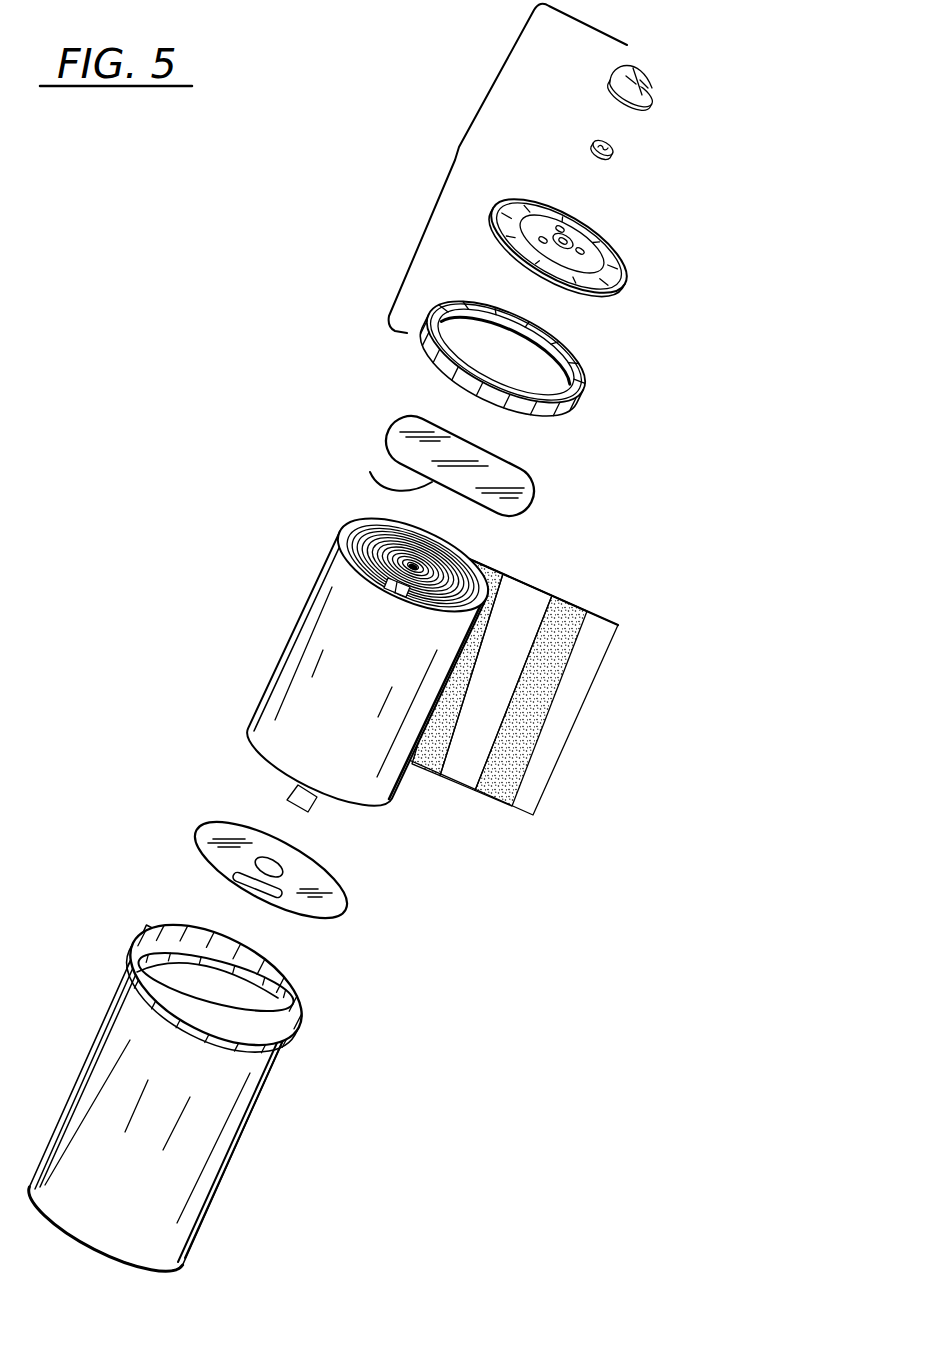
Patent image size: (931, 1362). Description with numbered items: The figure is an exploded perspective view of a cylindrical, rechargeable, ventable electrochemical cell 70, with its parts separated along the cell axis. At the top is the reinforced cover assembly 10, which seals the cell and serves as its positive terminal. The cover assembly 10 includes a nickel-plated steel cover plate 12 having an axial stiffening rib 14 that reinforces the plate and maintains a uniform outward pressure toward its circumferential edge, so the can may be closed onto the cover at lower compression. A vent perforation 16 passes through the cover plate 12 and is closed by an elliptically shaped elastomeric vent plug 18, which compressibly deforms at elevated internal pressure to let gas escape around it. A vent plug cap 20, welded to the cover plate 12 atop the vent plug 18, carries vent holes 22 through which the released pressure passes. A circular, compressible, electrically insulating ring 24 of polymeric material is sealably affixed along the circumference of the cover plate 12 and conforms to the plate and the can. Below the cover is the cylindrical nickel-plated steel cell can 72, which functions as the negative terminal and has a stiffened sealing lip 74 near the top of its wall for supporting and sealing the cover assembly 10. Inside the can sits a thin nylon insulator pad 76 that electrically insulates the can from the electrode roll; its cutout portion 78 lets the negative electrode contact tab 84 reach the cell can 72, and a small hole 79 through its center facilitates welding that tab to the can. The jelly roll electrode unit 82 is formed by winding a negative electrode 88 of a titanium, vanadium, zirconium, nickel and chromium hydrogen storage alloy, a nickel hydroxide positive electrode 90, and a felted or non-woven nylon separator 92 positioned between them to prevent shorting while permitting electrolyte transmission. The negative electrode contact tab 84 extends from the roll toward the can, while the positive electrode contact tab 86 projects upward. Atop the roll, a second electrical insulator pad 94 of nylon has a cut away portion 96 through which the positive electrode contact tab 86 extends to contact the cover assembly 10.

The cover assembly 10 is at (450, 155).
The cover plate 12 is at (584, 246).
The axial stiffening rib 14 is at (607, 257).
The vent perforation 16 is at (565, 240).
The vent plug 18 is at (614, 149).
The vent plug cap 20 is at (671, 75).
The vent holes 22 is at (643, 83).
The insulating ring 24 is at (583, 380).
The electrochemical cell 70 is at (705, 432).
The cell can 72 is at (180, 1085).
The can rim 74 is at (125, 983).
The insulator pad 76 is at (281, 863).
The cutout portion 78 is at (233, 875).
The small hole 79 is at (263, 855).
The electrode roll 82 is at (396, 677).
The negative electrode contact tab 84 is at (315, 800).
The positive electrode contact tab 86 is at (418, 568).
The negative electrode 88 is at (489, 683).
The positive electrode 90 is at (553, 600).
The separator means 92 is at (498, 786).
The second electrical insulator pad 94 is at (522, 489).
The cut away portion 96 is at (370, 472).